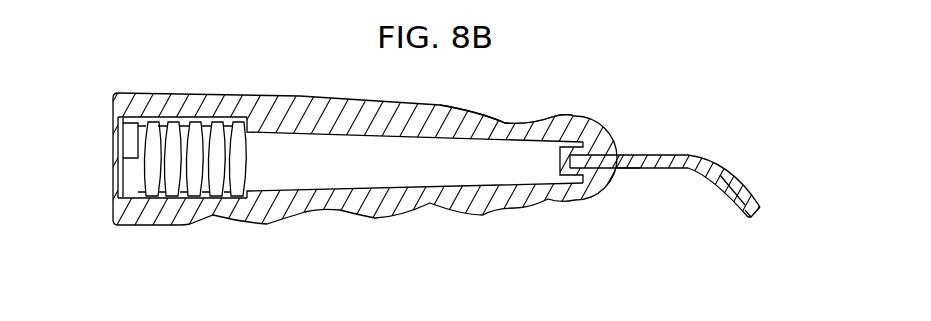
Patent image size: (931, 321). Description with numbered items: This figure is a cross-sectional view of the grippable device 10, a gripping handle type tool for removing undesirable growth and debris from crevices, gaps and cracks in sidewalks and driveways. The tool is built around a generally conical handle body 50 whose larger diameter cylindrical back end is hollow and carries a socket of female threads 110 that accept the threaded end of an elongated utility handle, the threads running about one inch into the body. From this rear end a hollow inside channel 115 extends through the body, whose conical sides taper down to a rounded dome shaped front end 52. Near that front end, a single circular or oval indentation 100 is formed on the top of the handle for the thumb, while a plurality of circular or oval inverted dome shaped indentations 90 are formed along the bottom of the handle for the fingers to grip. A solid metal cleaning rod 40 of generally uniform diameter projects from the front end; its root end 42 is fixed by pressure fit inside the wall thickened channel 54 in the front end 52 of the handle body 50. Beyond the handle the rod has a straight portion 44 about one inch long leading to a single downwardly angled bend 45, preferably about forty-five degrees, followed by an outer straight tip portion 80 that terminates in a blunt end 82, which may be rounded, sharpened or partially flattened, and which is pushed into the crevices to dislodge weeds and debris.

The gripping handle type tool 10 is at (667, 83).
The solid metal cleaning rod 40 is at (650, 158).
The root end 42 is at (558, 160).
The straight portion 44 is at (632, 169).
The single downwardly angled bend 45 is at (702, 167).
The grippable handle body 50 is at (237, 101).
The rounded dome shaped front end 52 is at (600, 121).
The wall thickened channel 54 is at (157, 225).
The straight tip portion 80 is at (735, 193).
The blunt end 82 is at (756, 218).
The plurality of circular or oval indentations 90 is at (550, 197).
The single circular or oval indentation 100 is at (505, 123).
The female threads 110 is at (168, 135).
The hollow inside channel 115 is at (349, 132).